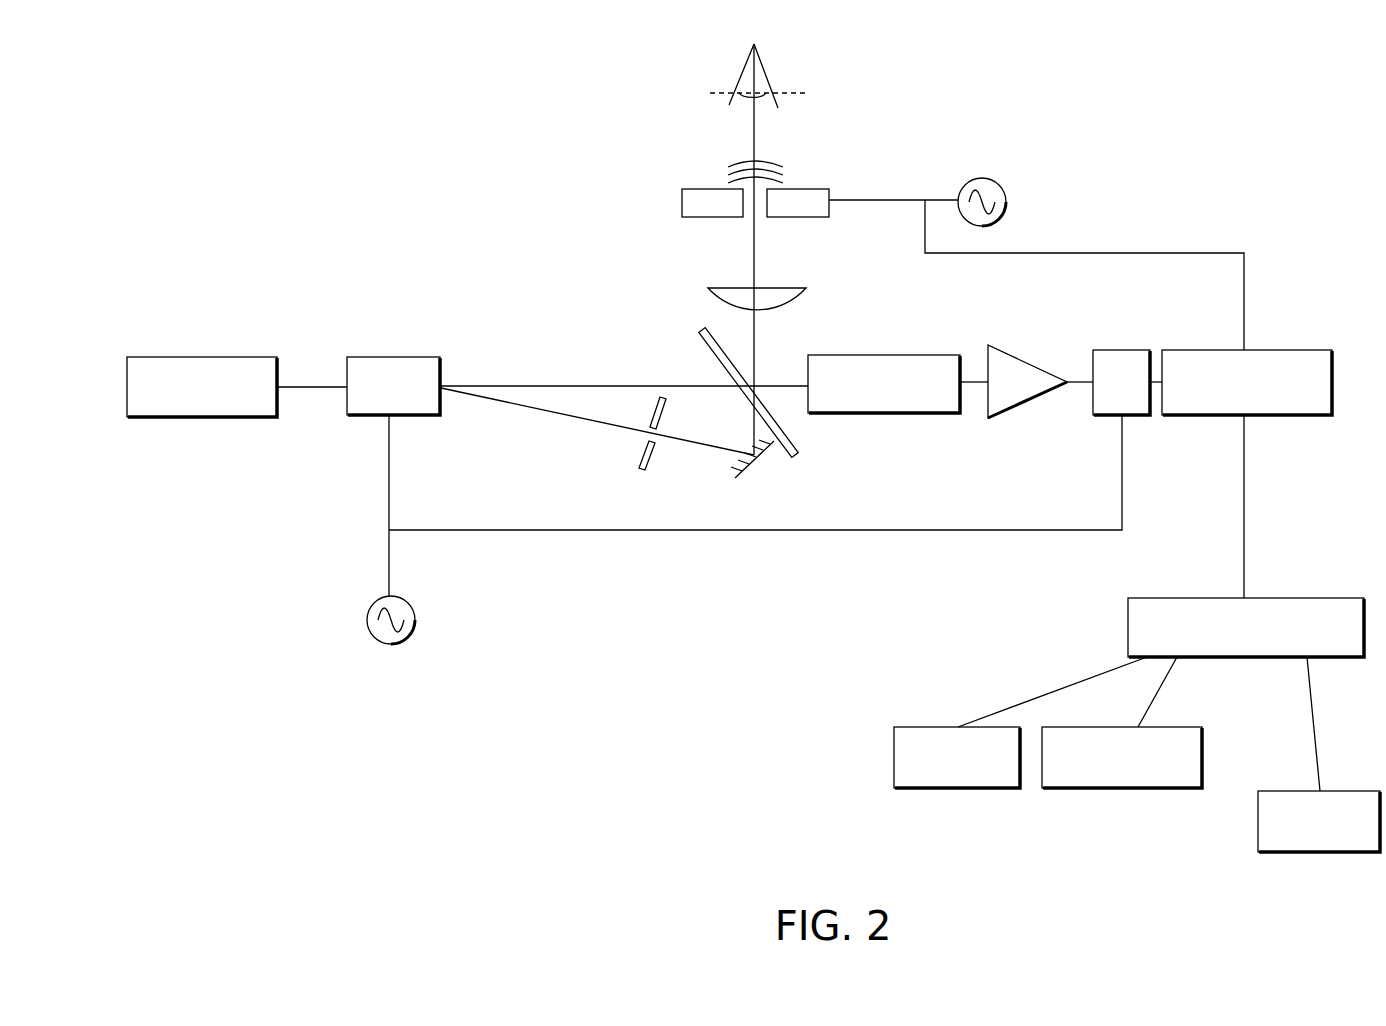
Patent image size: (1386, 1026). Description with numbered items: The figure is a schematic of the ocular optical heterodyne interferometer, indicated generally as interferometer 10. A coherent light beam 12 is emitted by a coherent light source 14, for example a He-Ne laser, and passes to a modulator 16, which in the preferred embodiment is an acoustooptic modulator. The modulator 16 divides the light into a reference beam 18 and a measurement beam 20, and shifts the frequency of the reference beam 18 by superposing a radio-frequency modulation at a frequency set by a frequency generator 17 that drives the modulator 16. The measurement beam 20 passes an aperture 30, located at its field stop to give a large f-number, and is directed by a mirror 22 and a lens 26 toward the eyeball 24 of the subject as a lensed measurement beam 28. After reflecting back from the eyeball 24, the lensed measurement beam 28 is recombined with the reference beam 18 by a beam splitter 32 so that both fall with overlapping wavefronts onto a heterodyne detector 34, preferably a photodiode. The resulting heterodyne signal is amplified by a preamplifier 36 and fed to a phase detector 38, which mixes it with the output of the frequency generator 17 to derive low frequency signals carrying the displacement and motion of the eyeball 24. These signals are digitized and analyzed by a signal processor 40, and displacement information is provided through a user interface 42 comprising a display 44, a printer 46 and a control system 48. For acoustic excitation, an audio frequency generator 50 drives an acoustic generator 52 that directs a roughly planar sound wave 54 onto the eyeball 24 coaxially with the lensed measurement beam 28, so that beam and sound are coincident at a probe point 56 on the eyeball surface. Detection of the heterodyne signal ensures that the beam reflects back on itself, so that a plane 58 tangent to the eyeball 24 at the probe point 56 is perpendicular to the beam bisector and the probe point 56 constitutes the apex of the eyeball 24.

The interferometer 10 is at (182, 272).
The coherent light beam 12 is at (316, 389).
The coherent light source 14 is at (199, 418).
The modulator 16 is at (394, 357).
The frequency generator 17 is at (366, 620).
The reference beam 18 is at (560, 385).
The measurement beam 20 is at (553, 414).
The mirror 22 is at (738, 469).
The eyeball 24 is at (745, 98).
The lens 26 is at (806, 288).
The lensed measurement beam 28 is at (757, 125).
The aperture 30 is at (645, 471).
The beam splitter 32 is at (798, 455).
The heterodyne detector 34 is at (884, 355).
The preamplifier 36 is at (1028, 358).
The phase detector 38 is at (1122, 350).
The signal processor 40 is at (1283, 350).
The user interface 42 is at (1128, 628).
The display 44 is at (975, 790).
The printer 46 is at (1326, 853).
The control system 48 is at (1148, 790).
The audio frequency generator 50 is at (976, 178).
The acoustic generator 52 is at (820, 217).
The sound wave 54 is at (728, 170).
The probe point 56 is at (757, 93).
The plane 58 is at (804, 93).